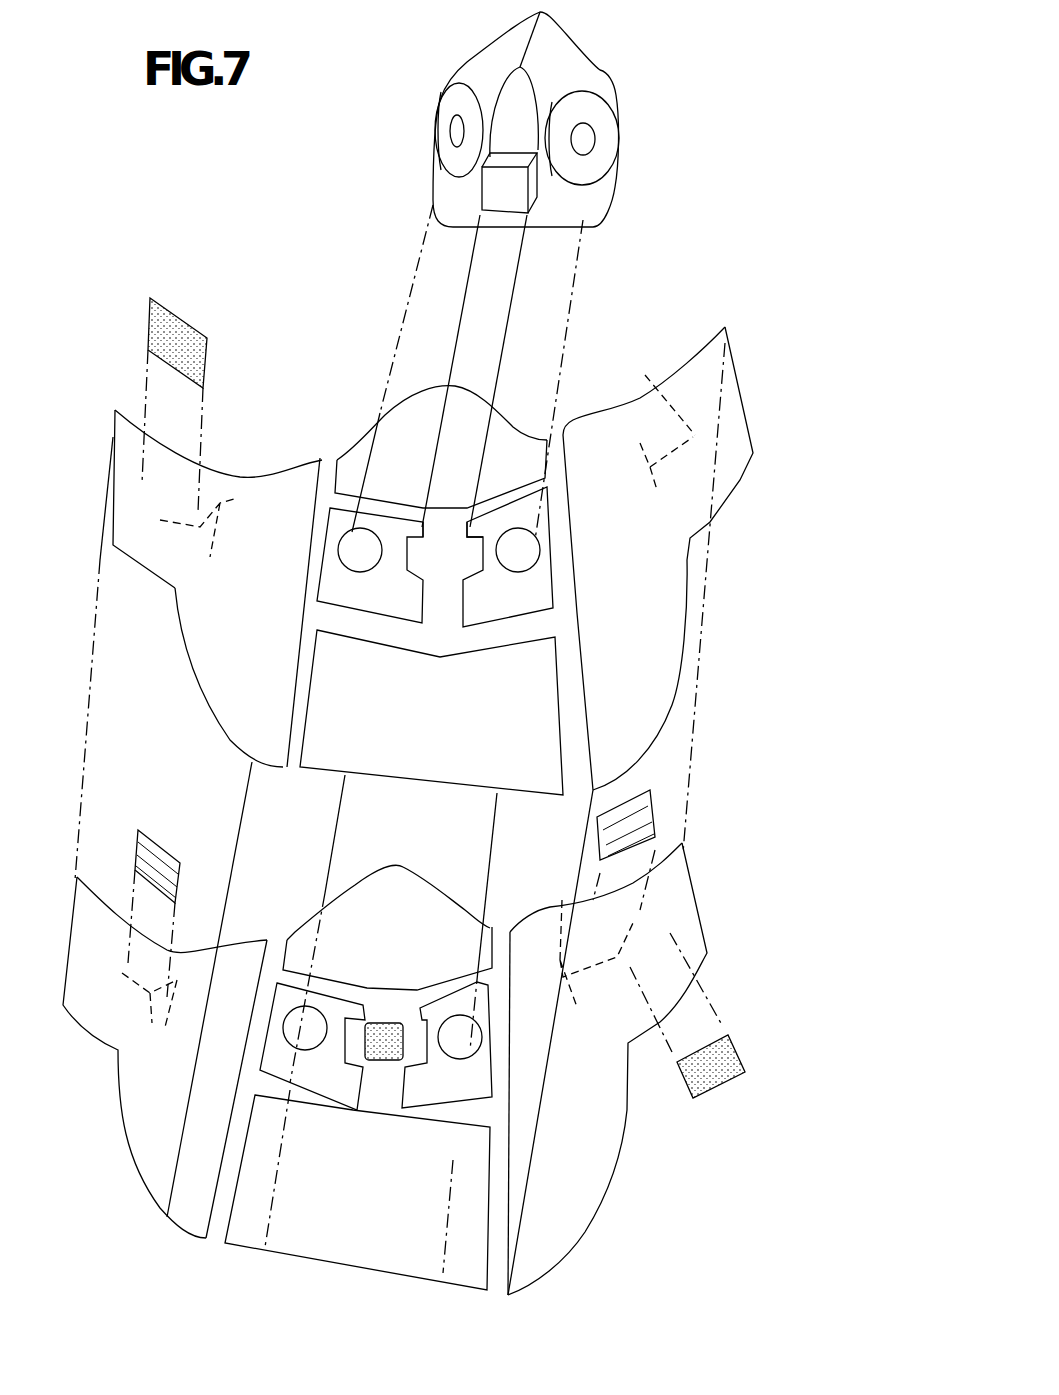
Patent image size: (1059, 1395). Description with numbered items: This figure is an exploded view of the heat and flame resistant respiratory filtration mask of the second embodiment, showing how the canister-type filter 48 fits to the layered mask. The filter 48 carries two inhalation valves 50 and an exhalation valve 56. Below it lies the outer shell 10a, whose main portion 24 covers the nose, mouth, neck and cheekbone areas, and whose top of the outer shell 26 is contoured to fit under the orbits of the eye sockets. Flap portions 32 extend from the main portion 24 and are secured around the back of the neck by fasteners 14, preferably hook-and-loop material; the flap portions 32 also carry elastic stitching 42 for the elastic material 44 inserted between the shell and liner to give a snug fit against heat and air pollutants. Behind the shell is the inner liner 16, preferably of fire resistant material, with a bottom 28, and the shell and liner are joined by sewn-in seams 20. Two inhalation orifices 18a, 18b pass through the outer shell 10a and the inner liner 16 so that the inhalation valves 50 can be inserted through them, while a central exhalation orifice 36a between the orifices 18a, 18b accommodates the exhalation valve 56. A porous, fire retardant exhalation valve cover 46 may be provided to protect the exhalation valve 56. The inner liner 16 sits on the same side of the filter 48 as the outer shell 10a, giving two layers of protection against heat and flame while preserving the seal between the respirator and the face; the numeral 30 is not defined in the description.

The outer shell 10a is at (607, 1178).
The fastener 14 is at (180, 318).
The inner liner 16 is at (682, 662).
The inhalation orifice 18a is at (338, 548).
The inhalation orifice 18b is at (540, 553).
The sewn-in seam 20 is at (472, 527).
The main portion 24 is at (360, 1280).
The top of the outer shell 26 is at (388, 880).
The bottom of the inner liner 28 is at (228, 745).
The upper yoke 30 is at (342, 450).
The flap portion 32 is at (113, 437).
The central exhalation orifice 36a is at (422, 527).
The elastic stitching 42 is at (408, 703).
The elastic material 44 is at (655, 820).
The exhalation valve cover 46 is at (375, 1050).
The filter 48 is at (588, 68).
The inhalation valve 50 is at (450, 122).
The exhalation valve 56 is at (535, 197).